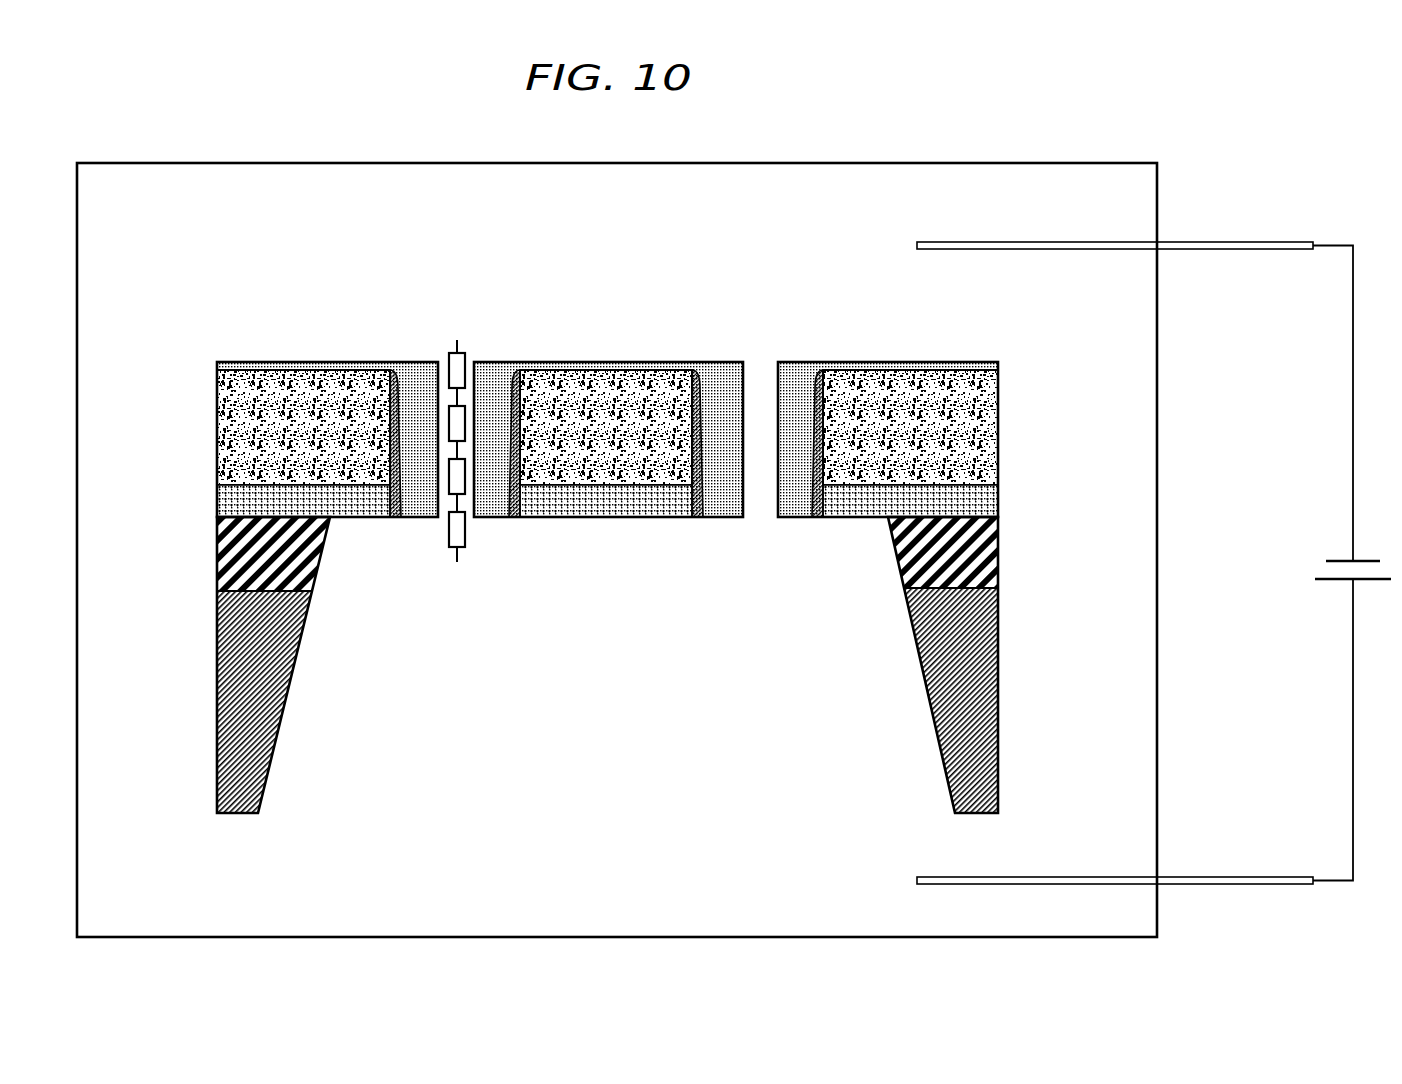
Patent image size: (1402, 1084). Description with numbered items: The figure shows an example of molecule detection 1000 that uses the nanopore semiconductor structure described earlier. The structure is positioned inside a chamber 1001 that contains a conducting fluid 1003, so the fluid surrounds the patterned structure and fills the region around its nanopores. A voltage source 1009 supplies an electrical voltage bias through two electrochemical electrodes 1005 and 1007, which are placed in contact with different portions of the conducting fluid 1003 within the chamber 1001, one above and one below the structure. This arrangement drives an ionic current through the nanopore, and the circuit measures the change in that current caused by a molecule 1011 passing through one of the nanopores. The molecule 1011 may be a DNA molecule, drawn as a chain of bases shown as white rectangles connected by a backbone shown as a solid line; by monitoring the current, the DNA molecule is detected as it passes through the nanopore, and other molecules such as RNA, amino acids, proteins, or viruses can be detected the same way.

The molecule detection 1000 is at (628, 136).
The chamber 1001 is at (1050, 163).
The conducting fluid 1003 is at (632, 742).
The electrochemical electrode 1005 is at (1230, 243).
The electrochemical electrode 1007 is at (1230, 877).
The voltage source 1009 is at (1313, 566).
The molecule 1011 is at (464, 338).